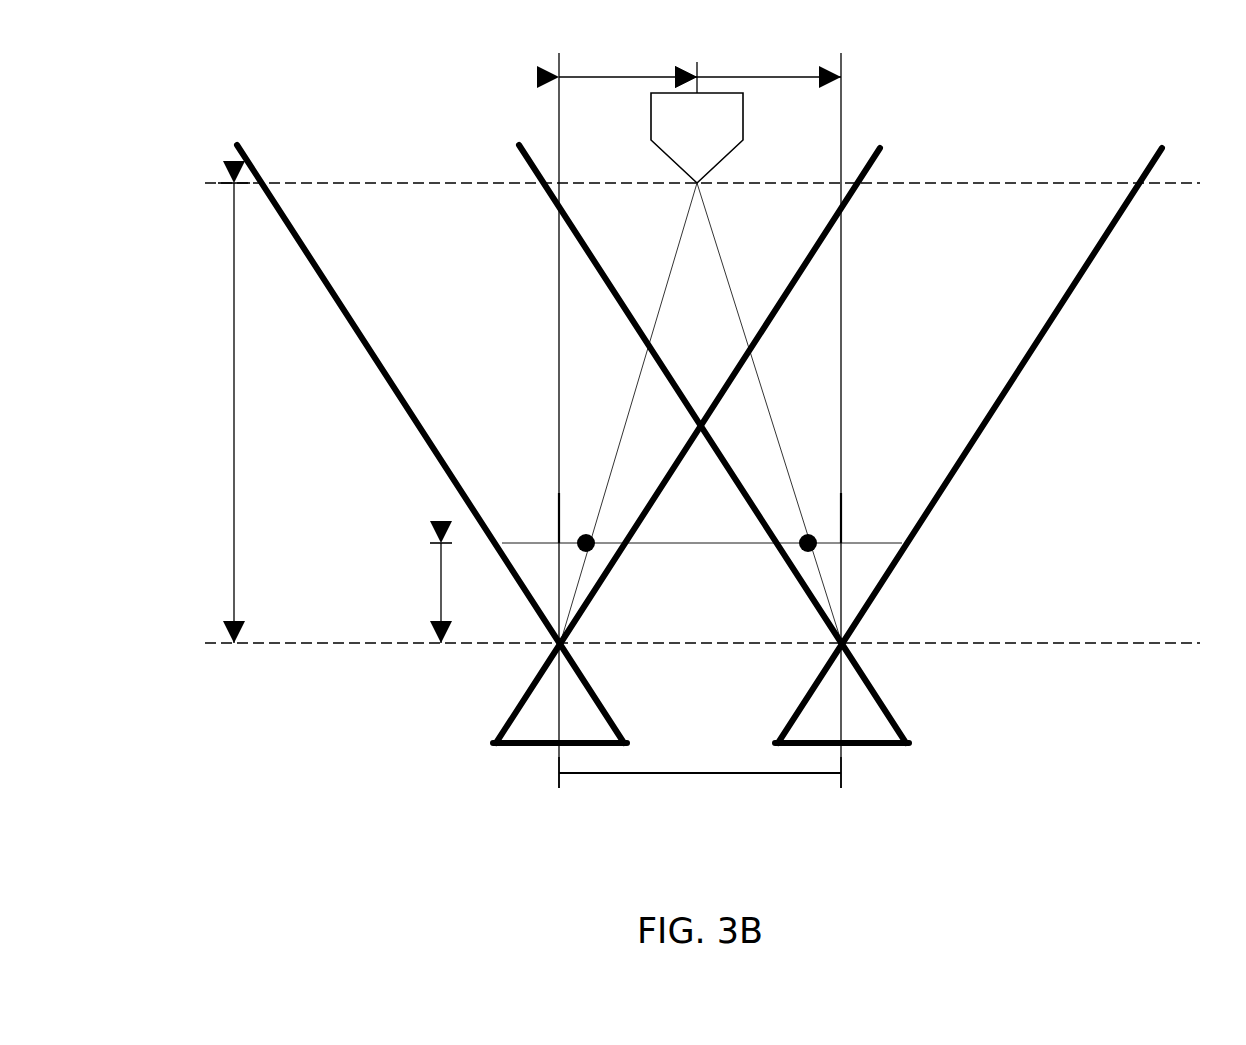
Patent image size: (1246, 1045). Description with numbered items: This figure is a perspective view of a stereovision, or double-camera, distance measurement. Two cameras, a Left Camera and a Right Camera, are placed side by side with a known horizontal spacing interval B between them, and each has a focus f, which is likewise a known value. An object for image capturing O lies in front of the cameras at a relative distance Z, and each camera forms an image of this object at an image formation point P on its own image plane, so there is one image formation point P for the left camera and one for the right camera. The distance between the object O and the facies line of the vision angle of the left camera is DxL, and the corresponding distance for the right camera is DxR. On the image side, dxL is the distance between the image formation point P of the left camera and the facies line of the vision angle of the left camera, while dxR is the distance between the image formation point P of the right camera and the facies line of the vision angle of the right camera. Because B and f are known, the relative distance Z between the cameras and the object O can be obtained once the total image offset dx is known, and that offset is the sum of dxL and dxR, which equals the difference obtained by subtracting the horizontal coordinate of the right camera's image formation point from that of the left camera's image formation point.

The object for image capturing O is at (701, 368).
The image formation point of the object P is at (607, 555).
The relative distance between the object and a camera Z is at (245, 413).
The focus f is at (448, 593).
The horizontal spacing interval between two cameras B is at (700, 788).
The distance between the object and a facies line of vision angle of a left camera DxL is at (628, 406).
The distance between the object and a facies line of a vision angle of a right camer DxR is at (769, 406).
The distance between the image formation point of a left camera and the facies line dxL is at (570, 540).
The distance between the image formation point of a right camera and the facies line dxR is at (830, 540).
The left camera Left Camera is at (500, 733).
The right camera Right Camera is at (897, 727).